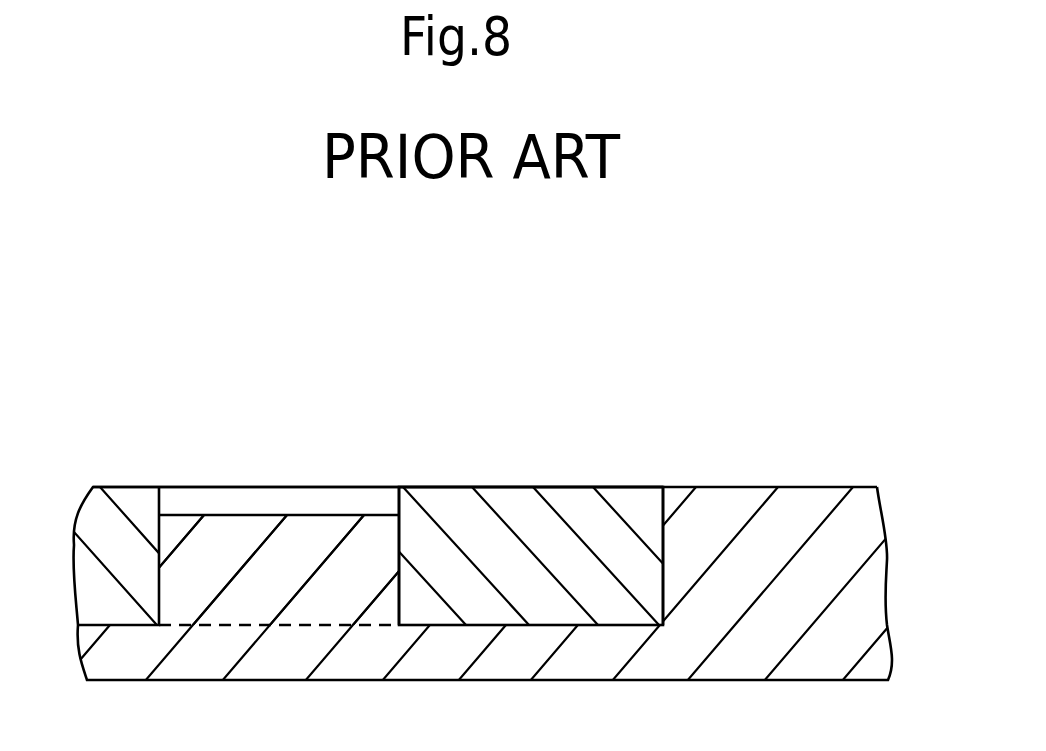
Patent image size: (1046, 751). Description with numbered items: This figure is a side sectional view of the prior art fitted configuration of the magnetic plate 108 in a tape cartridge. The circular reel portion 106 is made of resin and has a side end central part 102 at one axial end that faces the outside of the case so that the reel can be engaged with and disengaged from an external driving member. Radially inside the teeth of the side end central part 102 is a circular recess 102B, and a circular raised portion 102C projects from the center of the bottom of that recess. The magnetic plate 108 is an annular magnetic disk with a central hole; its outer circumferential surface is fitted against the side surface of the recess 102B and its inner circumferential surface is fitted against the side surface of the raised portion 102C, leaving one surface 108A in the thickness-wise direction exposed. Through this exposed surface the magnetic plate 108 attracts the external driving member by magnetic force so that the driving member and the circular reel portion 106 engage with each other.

The side end central part 102 is at (660, 372).
The circular recess 102B is at (663, 535).
The circular raised portion 102C is at (264, 514).
The circular reel portion 106 is at (828, 478).
The magnetic plate 108 is at (567, 481).
The one surface 108A is at (462, 488).